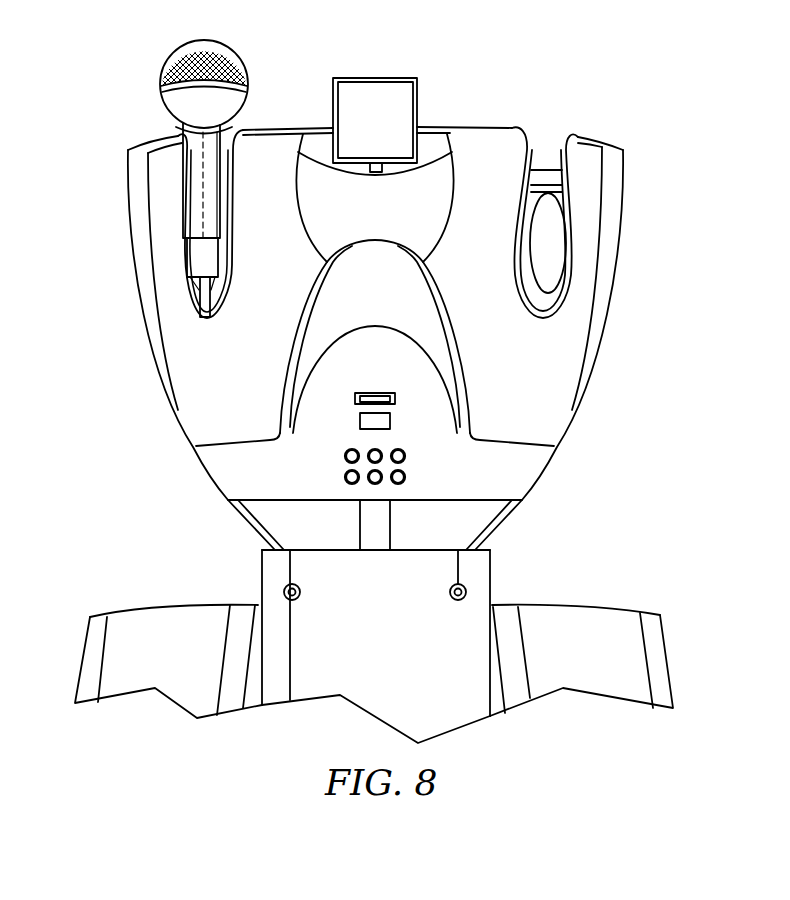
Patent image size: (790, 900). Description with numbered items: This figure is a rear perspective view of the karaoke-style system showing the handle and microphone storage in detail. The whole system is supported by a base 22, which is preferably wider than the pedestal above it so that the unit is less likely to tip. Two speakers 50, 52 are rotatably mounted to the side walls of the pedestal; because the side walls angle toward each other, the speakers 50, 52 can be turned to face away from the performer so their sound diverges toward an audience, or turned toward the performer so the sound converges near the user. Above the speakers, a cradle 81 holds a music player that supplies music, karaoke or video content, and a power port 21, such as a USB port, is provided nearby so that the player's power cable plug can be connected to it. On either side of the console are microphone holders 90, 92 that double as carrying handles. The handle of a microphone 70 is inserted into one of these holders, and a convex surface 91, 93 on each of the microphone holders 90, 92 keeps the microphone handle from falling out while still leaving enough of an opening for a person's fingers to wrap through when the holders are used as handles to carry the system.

The microphone 70 is at (223, 40).
The convex surface 93 is at (182, 160).
The microphone holder 92 is at (178, 224).
The cradle 81 is at (417, 103).
The convex surface 91 is at (528, 150).
The microphone holder 90 is at (580, 227).
The power port 21 is at (368, 390).
The base 22 is at (463, 632).
The speaker 50 is at (160, 627).
The speaker 52 is at (607, 627).